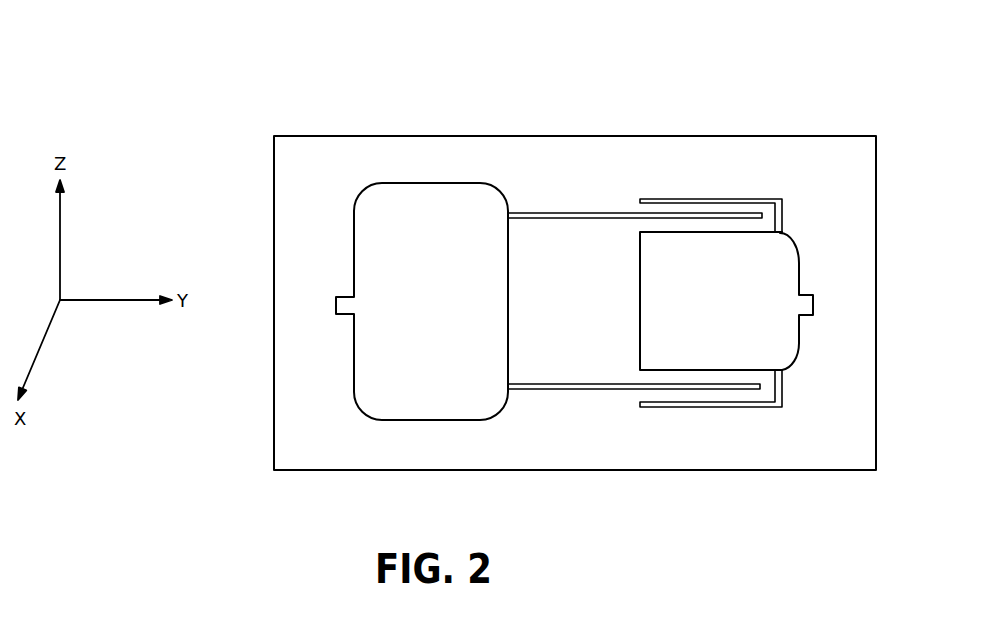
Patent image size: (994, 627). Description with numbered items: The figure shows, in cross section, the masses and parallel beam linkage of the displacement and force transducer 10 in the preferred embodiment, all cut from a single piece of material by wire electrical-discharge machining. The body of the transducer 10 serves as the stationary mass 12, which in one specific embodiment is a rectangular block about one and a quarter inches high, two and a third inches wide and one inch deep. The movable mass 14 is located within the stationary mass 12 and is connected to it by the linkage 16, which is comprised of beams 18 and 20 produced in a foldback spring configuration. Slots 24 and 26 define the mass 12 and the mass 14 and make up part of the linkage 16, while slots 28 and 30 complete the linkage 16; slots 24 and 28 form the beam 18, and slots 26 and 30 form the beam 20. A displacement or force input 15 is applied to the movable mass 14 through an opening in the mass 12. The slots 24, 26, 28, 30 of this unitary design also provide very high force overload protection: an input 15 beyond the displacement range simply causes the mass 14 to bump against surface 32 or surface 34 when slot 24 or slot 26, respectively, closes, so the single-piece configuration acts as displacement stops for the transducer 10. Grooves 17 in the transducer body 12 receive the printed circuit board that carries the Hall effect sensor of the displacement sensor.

The transducer 10 is at (728, 86).
The stationary mass 12 is at (829, 155).
The movable mass 14 is at (522, 286).
The displacement or force input 15 is at (557, 204).
The linkage 16 is at (737, 234).
The grooves 17 is at (352, 296).
The beam 18 is at (671, 234).
The beam 20 is at (687, 369).
The slot 24 is at (508, 216).
The slot 26 is at (506, 386).
The slot 28 is at (778, 235).
The slot 30 is at (780, 369).
The surface 32 is at (597, 212).
The surface 34 is at (548, 391).